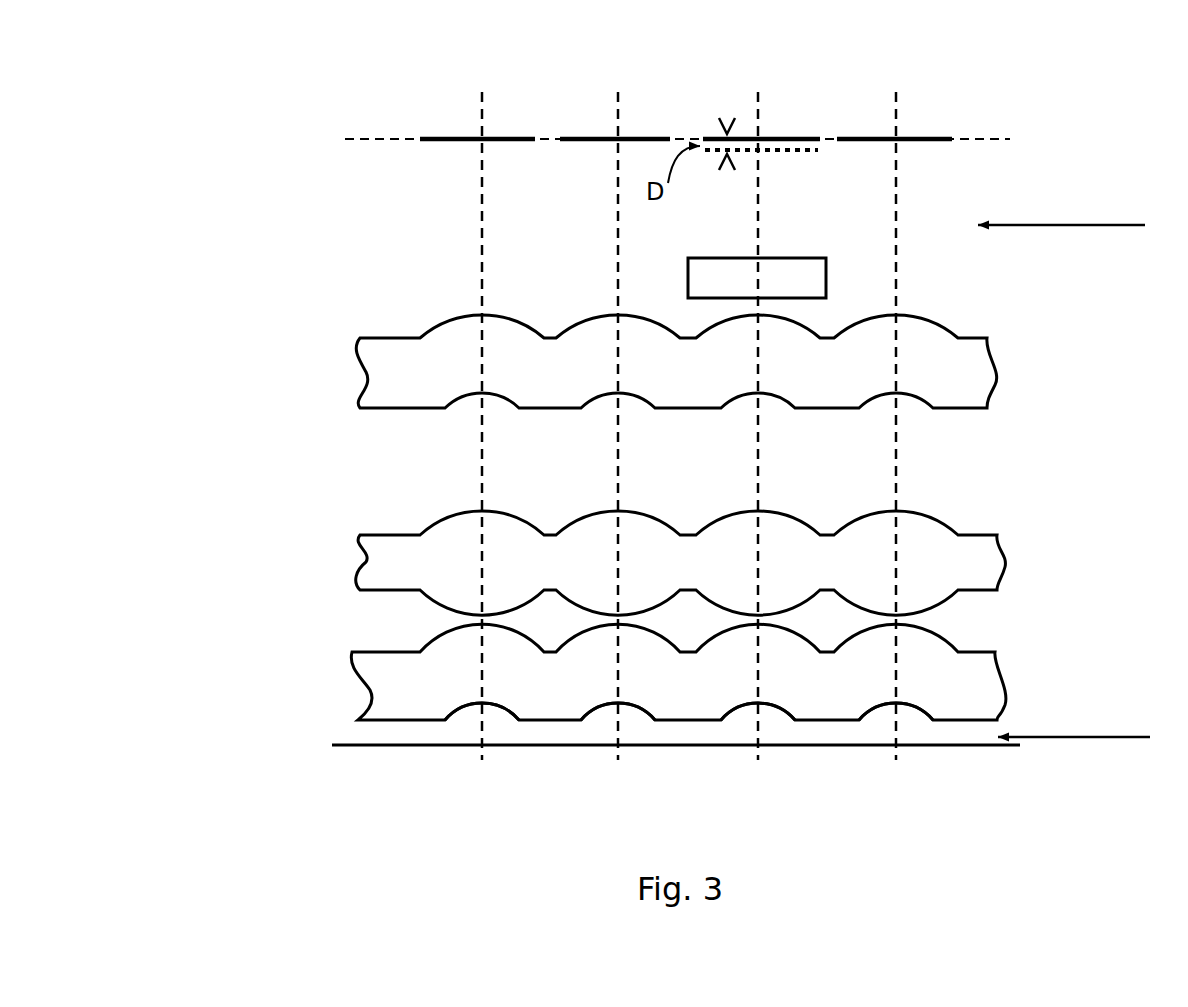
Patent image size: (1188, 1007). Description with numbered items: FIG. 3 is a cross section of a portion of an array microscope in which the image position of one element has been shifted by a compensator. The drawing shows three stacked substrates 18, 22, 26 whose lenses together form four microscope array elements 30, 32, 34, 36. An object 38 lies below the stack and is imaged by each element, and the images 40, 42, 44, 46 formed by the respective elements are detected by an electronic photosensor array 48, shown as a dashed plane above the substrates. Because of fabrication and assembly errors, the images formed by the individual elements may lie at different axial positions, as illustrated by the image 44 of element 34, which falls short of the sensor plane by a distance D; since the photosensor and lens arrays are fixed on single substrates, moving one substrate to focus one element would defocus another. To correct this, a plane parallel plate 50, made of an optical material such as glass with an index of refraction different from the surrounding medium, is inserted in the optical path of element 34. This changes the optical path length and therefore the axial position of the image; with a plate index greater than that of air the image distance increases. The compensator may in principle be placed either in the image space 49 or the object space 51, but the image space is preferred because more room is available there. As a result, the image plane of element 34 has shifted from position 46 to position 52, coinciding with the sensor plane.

The stacked substrate 18 is at (318, 685).
The stacked substrate 22 is at (328, 562).
The stacked substrate 26 is at (320, 365).
The microscope array element 30 is at (467, 722).
The microscope array element 32 is at (608, 722).
The microscope array element 34 is at (746, 722).
The microscope array element 36 is at (886, 722).
The object 38 is at (320, 745).
The image 40 is at (490, 133).
The image 42 is at (628, 133).
The image 44 is at (782, 158).
The image 46 is at (904, 133).
The electronic photosensor array 48 is at (322, 145).
The image space 49 is at (1081, 225).
The plane parallel plate 50 is at (846, 277).
The object space 51 is at (1093, 737).
The image position 52 is at (768, 133).